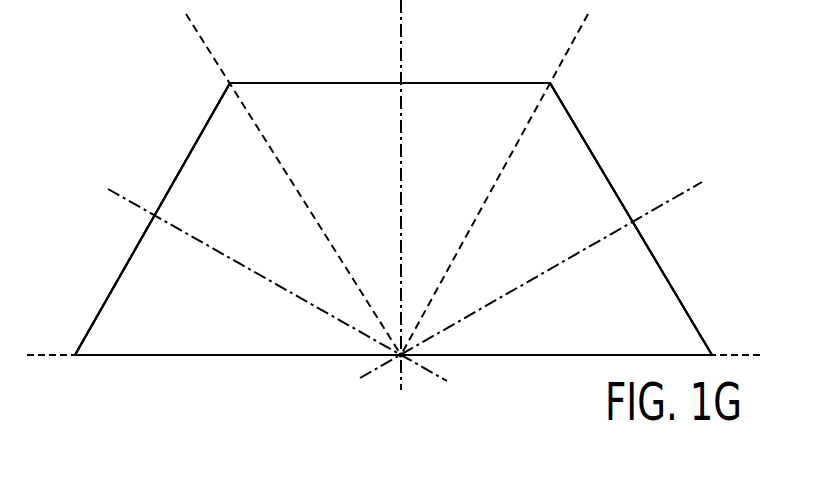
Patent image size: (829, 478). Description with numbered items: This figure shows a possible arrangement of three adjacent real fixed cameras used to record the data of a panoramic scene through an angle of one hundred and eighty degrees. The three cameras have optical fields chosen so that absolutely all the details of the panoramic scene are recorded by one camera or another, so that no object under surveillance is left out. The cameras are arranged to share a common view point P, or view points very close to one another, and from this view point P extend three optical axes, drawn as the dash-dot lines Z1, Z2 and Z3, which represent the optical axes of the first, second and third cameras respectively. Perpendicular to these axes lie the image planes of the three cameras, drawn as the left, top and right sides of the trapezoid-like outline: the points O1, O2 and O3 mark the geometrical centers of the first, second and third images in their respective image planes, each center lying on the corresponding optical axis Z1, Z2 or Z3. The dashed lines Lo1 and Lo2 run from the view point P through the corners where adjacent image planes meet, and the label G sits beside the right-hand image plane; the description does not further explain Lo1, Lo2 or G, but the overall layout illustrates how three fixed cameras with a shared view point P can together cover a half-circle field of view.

The optical system / group of lens elements G is at (394, 219).
The common view point P is at (408, 360).
The geometrical center of first image O1 is at (152, 219).
The geometrical center of second image O2 is at (399, 82).
The geometrical center of third image O3 is at (632, 220).
The optical axis of first camera Z1 is at (133, 208).
The optical axis of second camera Z2 is at (404, 67).
The optical axis of third camera Z3 is at (674, 206).
The first boundary line Lo1 is at (208, 29).
The second boundary line Lo2 is at (579, 47).